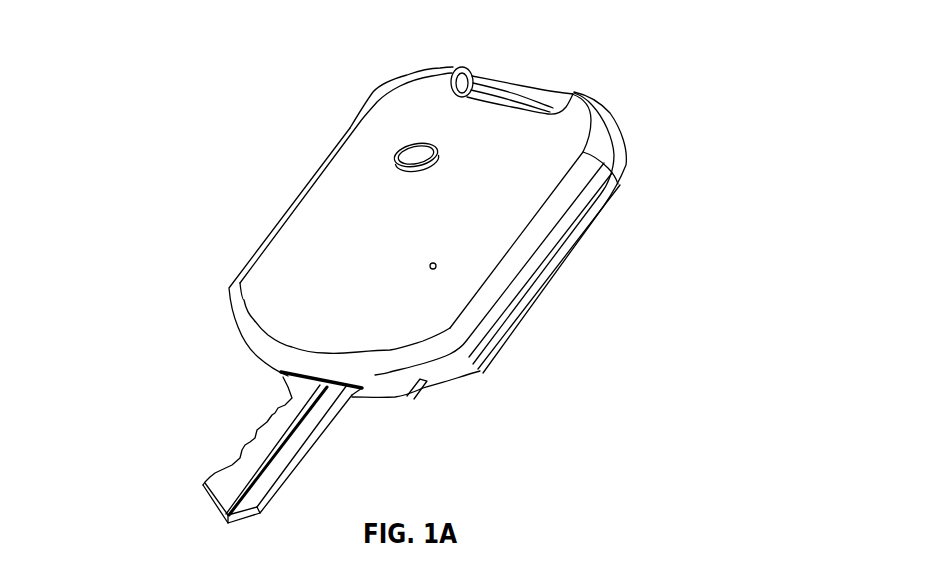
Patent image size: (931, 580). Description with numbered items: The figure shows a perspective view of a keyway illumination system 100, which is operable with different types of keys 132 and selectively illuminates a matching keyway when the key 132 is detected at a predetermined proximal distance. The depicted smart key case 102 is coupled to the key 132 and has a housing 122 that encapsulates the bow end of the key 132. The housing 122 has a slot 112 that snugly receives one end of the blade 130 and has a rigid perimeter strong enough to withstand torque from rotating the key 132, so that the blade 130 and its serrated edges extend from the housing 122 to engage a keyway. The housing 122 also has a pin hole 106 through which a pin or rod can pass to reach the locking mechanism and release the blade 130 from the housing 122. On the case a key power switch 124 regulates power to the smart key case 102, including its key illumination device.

The keyway illumination system 100 is at (101, 66).
The smart key case 102 is at (244, 227).
The pin hole 106 is at (440, 266).
The slot 112 is at (282, 378).
The housing 122 is at (626, 162).
The key power switch 124 is at (396, 151).
The blade 130 is at (305, 442).
The key 132 is at (227, 435).